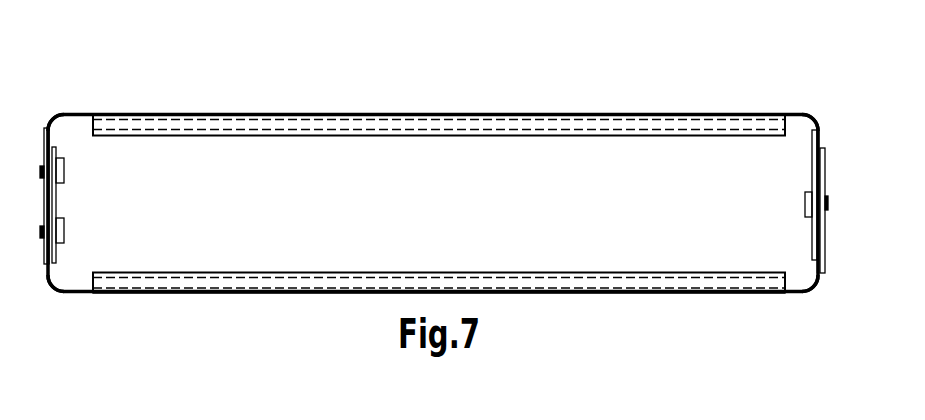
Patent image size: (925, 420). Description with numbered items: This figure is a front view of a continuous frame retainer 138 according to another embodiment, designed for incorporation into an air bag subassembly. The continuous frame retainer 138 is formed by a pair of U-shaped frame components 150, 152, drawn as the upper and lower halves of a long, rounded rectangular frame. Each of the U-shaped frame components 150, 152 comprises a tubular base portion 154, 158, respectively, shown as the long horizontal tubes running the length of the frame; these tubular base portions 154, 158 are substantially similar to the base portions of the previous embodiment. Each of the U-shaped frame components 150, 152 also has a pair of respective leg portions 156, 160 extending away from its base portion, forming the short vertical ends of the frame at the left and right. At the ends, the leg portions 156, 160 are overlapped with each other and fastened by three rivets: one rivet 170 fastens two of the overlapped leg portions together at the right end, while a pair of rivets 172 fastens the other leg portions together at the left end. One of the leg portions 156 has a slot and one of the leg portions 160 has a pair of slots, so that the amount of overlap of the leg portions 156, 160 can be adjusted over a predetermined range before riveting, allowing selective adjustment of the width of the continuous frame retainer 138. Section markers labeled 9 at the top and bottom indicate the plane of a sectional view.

The continuous frame retainer 138 is at (612, 313).
The U-shaped frame component 150 is at (497, 107).
The U-shaped frame component 152 is at (535, 296).
The tubular base portion 154 is at (369, 111).
The leg portions 156 is at (46, 119).
The tubular base portion 158 is at (290, 295).
The leg portions 160 is at (53, 275).
The rivet 170 is at (805, 203).
The rivets 172 is at (66, 174).
The section line 9- 9 is at (843, 43).